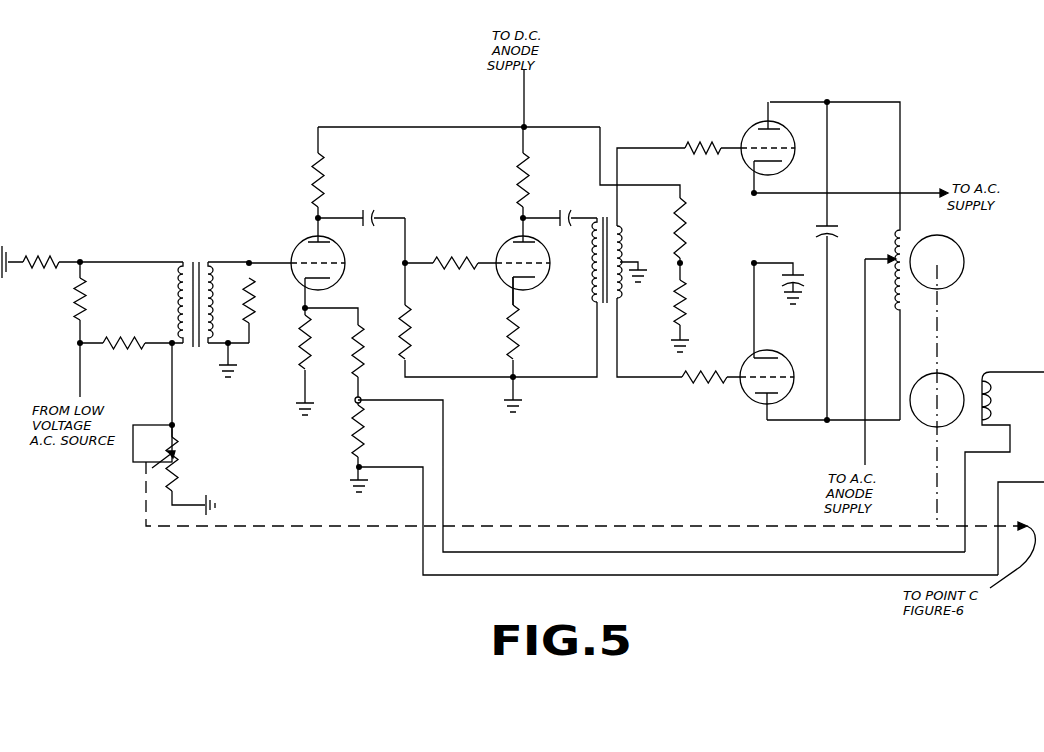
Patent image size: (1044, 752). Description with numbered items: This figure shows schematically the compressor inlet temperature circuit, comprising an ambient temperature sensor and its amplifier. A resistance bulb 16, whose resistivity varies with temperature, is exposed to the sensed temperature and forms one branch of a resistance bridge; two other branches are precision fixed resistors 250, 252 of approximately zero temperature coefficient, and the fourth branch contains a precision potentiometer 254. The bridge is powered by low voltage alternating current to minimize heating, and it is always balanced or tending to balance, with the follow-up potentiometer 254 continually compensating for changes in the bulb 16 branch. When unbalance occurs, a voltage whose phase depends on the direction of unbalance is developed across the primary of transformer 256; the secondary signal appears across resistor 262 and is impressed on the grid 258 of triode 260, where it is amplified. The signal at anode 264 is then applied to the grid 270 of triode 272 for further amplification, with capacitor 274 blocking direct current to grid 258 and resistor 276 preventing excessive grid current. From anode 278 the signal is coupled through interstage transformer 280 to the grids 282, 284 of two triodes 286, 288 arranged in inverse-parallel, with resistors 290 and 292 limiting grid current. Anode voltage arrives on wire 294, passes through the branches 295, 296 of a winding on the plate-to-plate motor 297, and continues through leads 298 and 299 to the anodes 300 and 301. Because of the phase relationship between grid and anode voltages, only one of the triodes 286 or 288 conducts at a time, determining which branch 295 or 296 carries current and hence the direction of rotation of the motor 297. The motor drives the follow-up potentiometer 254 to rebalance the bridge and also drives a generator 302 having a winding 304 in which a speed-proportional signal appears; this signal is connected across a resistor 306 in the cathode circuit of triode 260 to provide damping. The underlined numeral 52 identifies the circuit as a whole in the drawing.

The resistance bulb 16 is at (44, 261).
The precision fixed resistor 250 is at (88, 299).
The precision fixed resistor 252 is at (119, 339).
The precision potentiometer 254 is at (182, 457).
The transformer 256 is at (197, 260).
The grid 258 is at (343, 271).
The triode 260 is at (330, 292).
The resistor 262 is at (254, 307).
The anode 264 is at (330, 243).
The grid 270 is at (541, 264).
The triode 272 is at (540, 283).
The capacitor 274 is at (376, 216).
The resistor 276 is at (453, 256).
The anode 278 is at (518, 238).
The interstage transformer 280 is at (605, 212).
The grid 282 is at (783, 146).
The grid 284 is at (782, 369).
The triode 286 is at (785, 162).
The triode 288 is at (778, 393).
The resistor 290 is at (700, 141).
The resistor 292 is at (707, 386).
The wire 294 is at (862, 440).
The branch of motor winding 295 is at (897, 312).
The branch of motor winding 296 is at (882, 254).
The plate-to-plate motor 297 is at (965, 259).
The lead 298 is at (868, 102).
The lead 299 is at (832, 422).
The anode 300 is at (762, 122).
The anode 301 is at (765, 398).
The generator 302 is at (955, 373).
The winding 304 is at (1011, 386).
The resistor 306 is at (352, 431).
The trigger circuit 52 is at (612, 450).